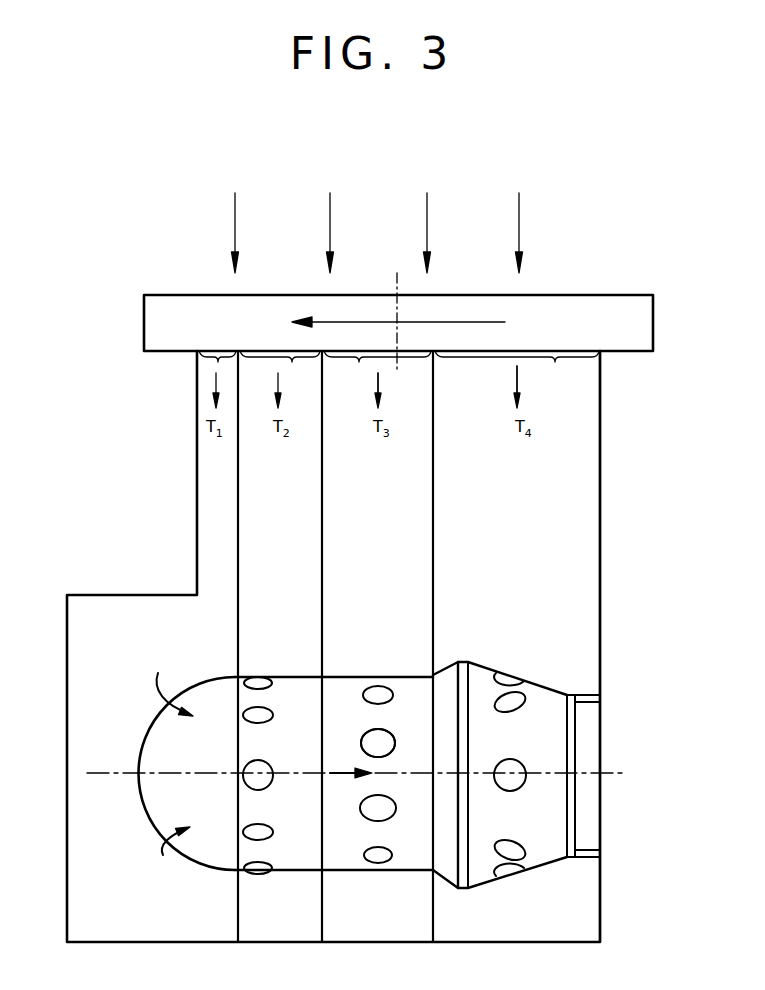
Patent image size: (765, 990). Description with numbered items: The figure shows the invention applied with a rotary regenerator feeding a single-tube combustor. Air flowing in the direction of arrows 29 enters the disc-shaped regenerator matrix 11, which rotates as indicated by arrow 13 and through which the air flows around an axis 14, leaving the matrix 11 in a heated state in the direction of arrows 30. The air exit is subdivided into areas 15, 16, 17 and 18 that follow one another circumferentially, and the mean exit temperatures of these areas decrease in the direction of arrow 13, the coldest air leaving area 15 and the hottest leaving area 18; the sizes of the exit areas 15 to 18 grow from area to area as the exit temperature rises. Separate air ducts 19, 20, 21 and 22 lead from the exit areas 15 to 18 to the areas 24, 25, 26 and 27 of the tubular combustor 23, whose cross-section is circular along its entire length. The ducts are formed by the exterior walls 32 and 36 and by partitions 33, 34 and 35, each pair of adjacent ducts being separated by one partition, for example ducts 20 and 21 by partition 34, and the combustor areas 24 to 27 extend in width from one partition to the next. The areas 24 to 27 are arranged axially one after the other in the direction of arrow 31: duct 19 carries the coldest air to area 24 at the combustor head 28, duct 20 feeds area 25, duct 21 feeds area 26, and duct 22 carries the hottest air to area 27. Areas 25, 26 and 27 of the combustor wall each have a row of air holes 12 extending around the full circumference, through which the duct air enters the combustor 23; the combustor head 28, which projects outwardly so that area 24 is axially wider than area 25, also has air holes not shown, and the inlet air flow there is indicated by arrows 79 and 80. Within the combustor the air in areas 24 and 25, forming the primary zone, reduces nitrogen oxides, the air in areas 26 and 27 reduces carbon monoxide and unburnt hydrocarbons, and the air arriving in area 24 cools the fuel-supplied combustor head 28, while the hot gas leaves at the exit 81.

The rotary regenerator matrix 11 is at (612, 311).
The air holes 12 is at (385, 738).
The rotation direction arrow 13 is at (458, 323).
The axis 14 is at (397, 286).
The first air exit area 15 is at (217, 379).
The second air exit area 16 is at (280, 379).
The third air exit area 17 is at (377, 379).
The fourth air exit area 18 is at (517, 379).
The first air duct 19 is at (204, 545).
The second air duct 20 is at (268, 545).
The third air duct 21 is at (363, 545).
The fourth air duct 22 is at (508, 545).
The tubular combustor 23 is at (333, 873).
The first combustor area 24 is at (88, 745).
The second combustor area 25 is at (268, 753).
The third combustor area 26 is at (331, 753).
The fourth combustor area 27 is at (496, 742).
The combustor head 28 is at (158, 800).
The air inlet arrows 29 is at (331, 210).
The air exit arrows 30 is at (381, 374).
The tube-axial direction arrow 31 is at (342, 776).
The exterior wall 32 is at (197, 551).
The first partition 33 is at (238, 621).
The second partition 34 is at (322, 621).
The third partition 35 is at (433, 617).
The exterior wall 36 is at (600, 617).
The inlet air flow arrow 79 is at (157, 682).
The inlet air flow arrow 80 is at (161, 856).
The hot gas exit 81 is at (588, 750).